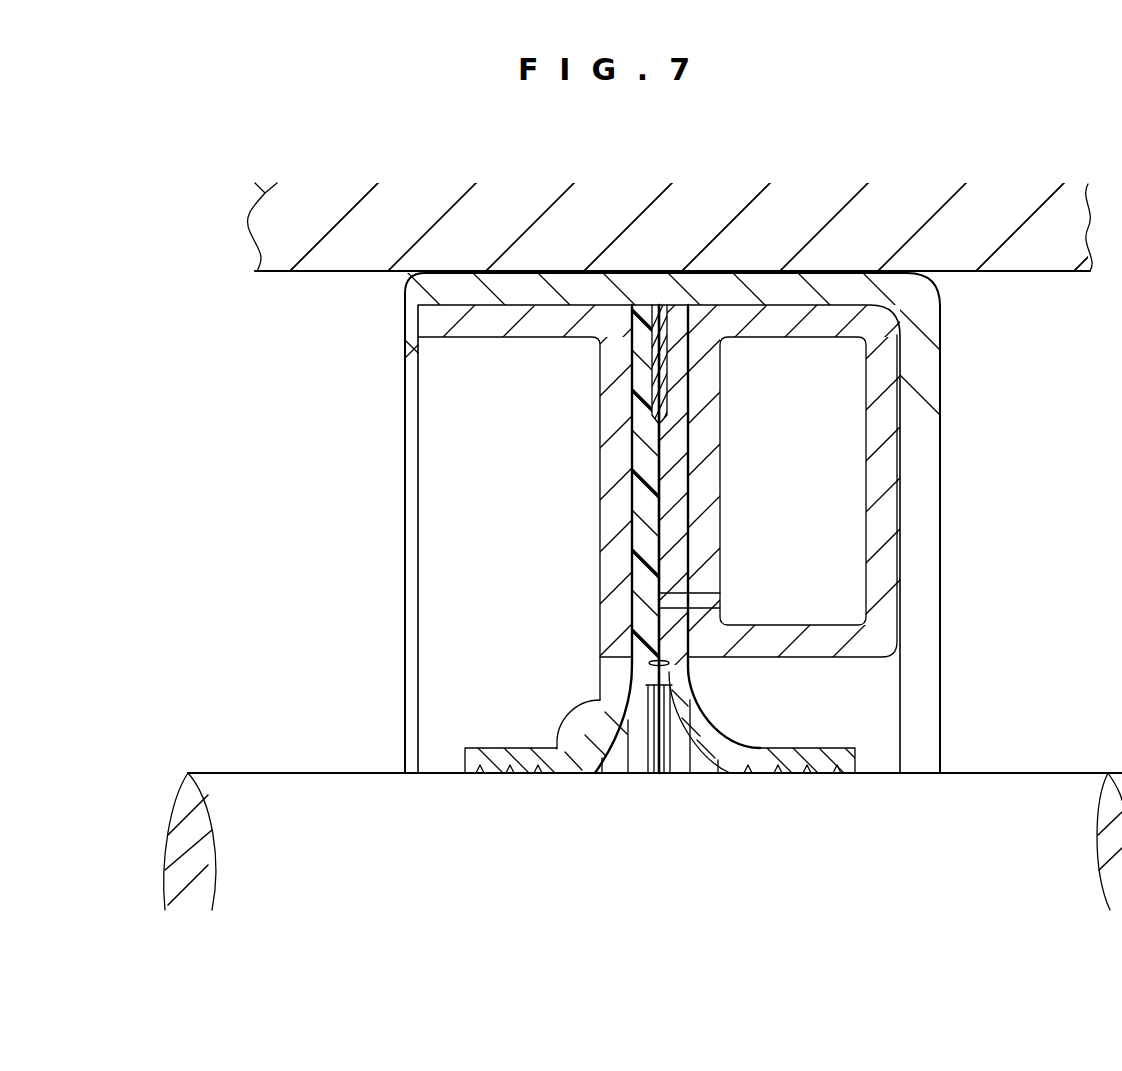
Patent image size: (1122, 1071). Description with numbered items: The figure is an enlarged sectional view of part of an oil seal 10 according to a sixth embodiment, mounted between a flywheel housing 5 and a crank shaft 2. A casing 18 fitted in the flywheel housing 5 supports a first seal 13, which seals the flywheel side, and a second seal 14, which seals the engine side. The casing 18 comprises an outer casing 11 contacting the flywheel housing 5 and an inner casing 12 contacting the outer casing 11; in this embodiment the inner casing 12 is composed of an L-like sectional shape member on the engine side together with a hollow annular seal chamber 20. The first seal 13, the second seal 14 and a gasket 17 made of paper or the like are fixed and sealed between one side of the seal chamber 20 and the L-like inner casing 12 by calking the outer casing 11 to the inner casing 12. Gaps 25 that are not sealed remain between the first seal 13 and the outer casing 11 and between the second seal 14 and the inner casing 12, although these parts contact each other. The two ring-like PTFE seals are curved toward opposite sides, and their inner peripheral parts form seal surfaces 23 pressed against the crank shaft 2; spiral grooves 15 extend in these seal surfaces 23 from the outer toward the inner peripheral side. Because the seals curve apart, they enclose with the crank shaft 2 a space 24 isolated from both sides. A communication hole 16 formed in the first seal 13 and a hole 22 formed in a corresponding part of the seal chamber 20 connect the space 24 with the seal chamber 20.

The crank shaft 2 is at (230, 787).
The flywheel housing 5 is at (258, 218).
The oil seal 10 is at (561, 530).
The outer casing 11 is at (926, 329).
The inner casing 12 is at (610, 467).
The first seal 13 is at (853, 748).
The second seal 14 is at (503, 750).
The spiral grooves 15 is at (572, 770).
The communication hole 16 is at (686, 628).
The gasket 17 is at (666, 368).
The casing 18 is at (561, 500).
The seal chamber 20 is at (887, 480).
The hole 22 is at (683, 602).
The seal surfaces 23 is at (500, 778).
The space 24 is at (637, 765).
The gaps 25 is at (632, 568).